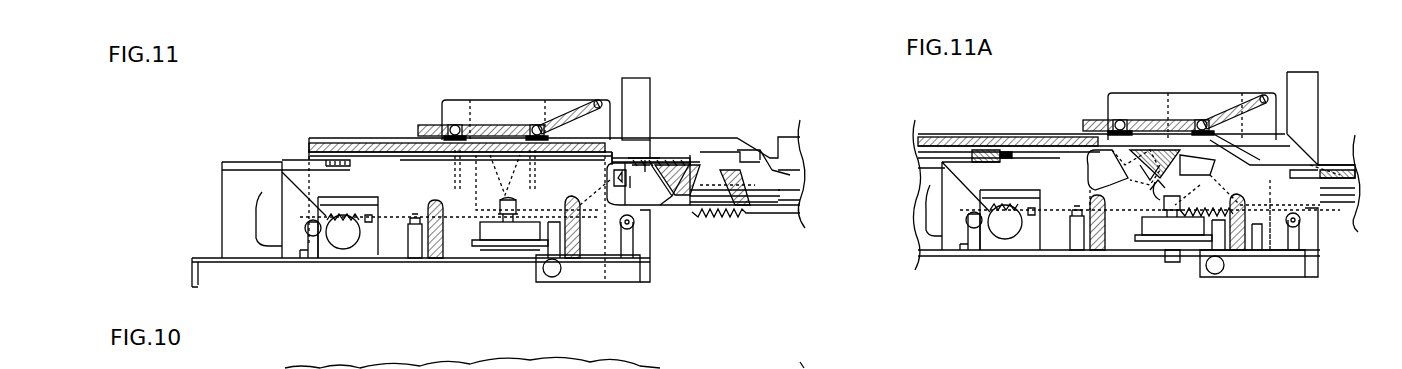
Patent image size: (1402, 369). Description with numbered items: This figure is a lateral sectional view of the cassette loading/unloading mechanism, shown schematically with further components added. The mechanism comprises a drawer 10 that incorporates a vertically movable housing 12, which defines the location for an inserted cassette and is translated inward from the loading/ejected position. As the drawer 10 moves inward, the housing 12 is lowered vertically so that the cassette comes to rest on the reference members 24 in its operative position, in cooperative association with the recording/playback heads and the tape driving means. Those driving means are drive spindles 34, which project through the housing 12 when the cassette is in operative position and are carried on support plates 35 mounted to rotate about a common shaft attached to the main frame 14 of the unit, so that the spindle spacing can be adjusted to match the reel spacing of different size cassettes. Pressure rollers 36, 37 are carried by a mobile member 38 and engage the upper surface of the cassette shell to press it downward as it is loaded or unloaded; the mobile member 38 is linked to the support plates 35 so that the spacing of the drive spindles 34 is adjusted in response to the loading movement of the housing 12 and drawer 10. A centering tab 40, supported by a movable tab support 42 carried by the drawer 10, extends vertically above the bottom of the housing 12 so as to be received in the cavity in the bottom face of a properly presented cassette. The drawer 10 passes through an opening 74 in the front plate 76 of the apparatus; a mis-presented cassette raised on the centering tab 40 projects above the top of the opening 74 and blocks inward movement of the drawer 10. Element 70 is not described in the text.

In FIG. 11, the drawer 10 is at (350, 134).
In FIG. 11A, the drawer 10 is at (1020, 128).
In FIG. 11, the housing 12 is at (783, 138).
In FIG. 11A, the housing 12 is at (1338, 152).
In FIG. 11, the main frame 14 is at (628, 270).
In FIG. 11A, the main frame 14 is at (1300, 236).
In FIG. 11, the reference members 24 is at (414, 243).
In FIG. 11A, the reference members 24 is at (1075, 237).
In FIG. 11, the drive spindles 34 is at (484, 240).
In FIG. 11, the support plates 35 is at (505, 248).
In FIG. 11, the pressure roller 36 is at (456, 124).
In FIG. 11A, the pressure roller 36 is at (1112, 124).
In FIG. 11, the pressure roller 37 is at (538, 124).
In FIG. 11A, the pressure roller 37 is at (1203, 119).
In FIG. 11, the mobile member 38 is at (481, 95).
In FIG. 11A, the mobile member 38 is at (1139, 95).
In FIG. 11, the centering tab 40 is at (760, 138).
In FIG. 11A, the centering tab 40 is at (1090, 185).
In FIG. 11, the tab support 42 is at (688, 195).
In FIG. 11, the lip 70 is at (340, 166).
In FIG. 11, the opening 74 is at (660, 130).
In FIG. 11, the front plate 76 is at (634, 97).
In FIG. 11A, the front plate 76 is at (1305, 92).